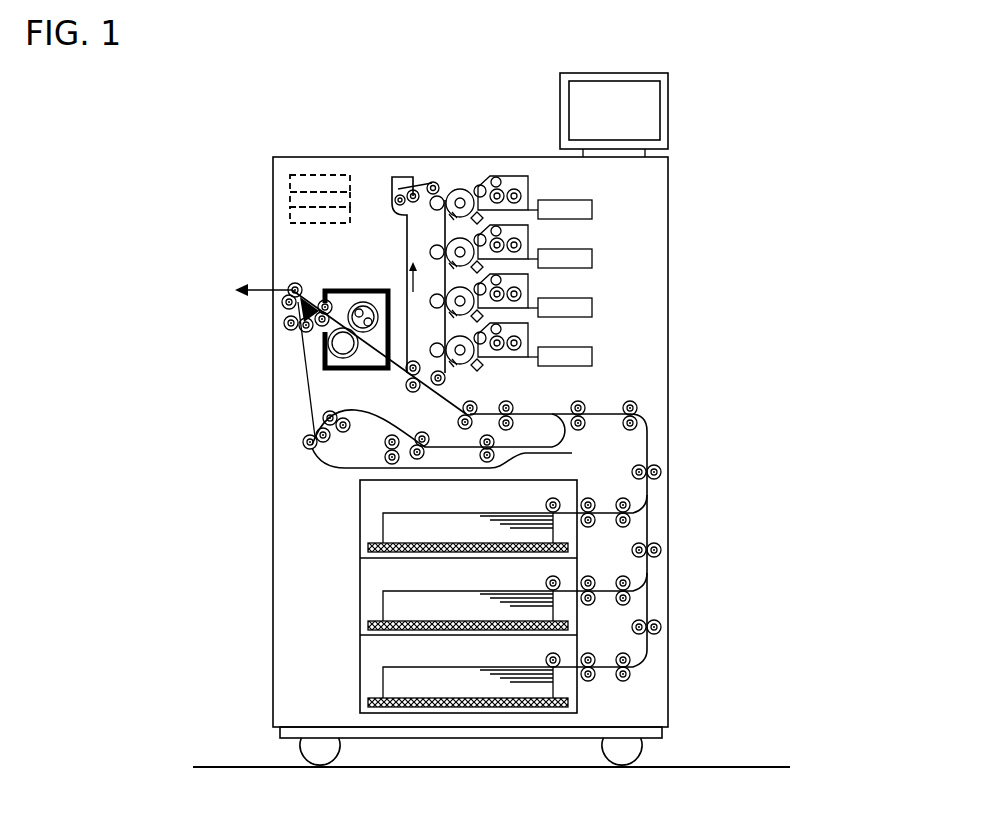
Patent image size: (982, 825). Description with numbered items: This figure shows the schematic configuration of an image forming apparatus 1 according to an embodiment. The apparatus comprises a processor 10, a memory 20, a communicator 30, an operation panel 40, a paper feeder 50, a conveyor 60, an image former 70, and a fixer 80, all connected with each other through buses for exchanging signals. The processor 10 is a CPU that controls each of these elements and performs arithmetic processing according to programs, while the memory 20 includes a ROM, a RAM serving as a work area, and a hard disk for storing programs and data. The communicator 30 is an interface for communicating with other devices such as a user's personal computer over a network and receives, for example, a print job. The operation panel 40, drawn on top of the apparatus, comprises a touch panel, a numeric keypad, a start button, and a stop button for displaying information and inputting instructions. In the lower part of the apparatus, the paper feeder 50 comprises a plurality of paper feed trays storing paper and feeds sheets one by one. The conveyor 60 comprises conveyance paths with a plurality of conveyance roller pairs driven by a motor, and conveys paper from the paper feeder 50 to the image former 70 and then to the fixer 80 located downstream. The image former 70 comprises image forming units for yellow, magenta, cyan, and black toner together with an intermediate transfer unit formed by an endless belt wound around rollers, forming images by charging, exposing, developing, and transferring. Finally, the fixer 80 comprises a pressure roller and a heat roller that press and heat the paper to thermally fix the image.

The image forming apparatus 1 is at (210, 108).
The processor 10 is at (287, 186).
The memory 20 is at (286, 204).
The communicator 30 is at (287, 216).
The operation panel 40 is at (560, 112).
The paper feeder 50 is at (340, 490).
The conveyor 60 is at (627, 453).
The image former 70 is at (608, 204).
The fixer 80 is at (357, 287).